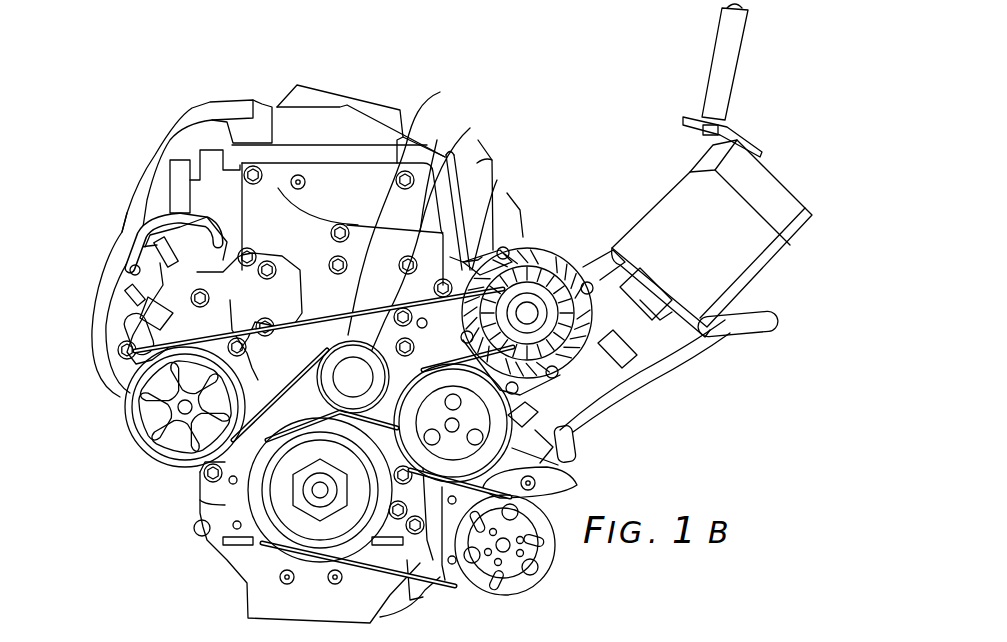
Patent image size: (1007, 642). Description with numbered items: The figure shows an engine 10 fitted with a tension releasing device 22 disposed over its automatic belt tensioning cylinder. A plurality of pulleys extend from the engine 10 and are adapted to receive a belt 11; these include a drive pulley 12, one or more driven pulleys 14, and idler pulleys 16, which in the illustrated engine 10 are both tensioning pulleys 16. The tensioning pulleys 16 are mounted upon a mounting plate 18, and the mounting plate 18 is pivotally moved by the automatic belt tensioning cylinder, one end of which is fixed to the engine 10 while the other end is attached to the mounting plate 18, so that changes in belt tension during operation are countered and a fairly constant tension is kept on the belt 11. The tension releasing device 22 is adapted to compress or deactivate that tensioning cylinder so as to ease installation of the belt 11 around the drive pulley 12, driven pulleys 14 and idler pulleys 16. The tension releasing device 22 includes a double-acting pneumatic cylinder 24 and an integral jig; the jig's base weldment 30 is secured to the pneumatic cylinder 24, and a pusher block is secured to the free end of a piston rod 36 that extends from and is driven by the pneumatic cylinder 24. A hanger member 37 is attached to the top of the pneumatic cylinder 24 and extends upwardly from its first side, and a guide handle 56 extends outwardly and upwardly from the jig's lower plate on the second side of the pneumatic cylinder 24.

The engine 10 is at (142, 502).
The belt 11 is at (440, 92).
The drive pulley 12 is at (245, 550).
The driven pulleys 14 is at (130, 420).
The idler pulleys 16 is at (470, 128).
The mounting plate 18 is at (487, 188).
The tension releasing device 22 is at (636, 165).
The double-acting pneumatic cylinder 24 is at (730, 215).
The base weldment 30 is at (607, 400).
The piston rod 36 is at (584, 268).
The hanger member 37 is at (737, 70).
The guide handle 56 is at (733, 338).